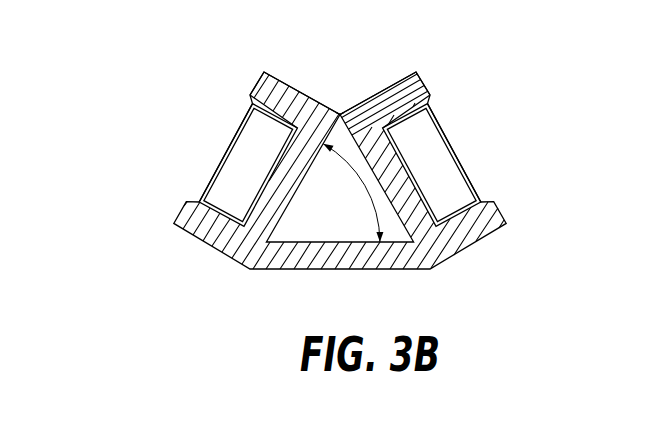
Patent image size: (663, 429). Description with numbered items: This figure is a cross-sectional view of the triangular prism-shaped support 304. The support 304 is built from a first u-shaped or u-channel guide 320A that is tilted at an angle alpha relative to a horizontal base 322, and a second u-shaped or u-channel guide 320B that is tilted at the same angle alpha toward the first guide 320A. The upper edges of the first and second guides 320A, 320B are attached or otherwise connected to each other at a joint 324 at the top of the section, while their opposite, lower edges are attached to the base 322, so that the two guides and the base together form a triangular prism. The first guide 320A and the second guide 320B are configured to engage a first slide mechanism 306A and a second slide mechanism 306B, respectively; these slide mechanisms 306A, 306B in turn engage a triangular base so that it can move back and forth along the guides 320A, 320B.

The triangular prism-shaped support 304 is at (127, 45).
The first u-shaped or u-channel guide 320A is at (261, 71).
The second u-shaped or u-channel guide 320B is at (421, 84).
The horizontal base 322 is at (323, 247).
The joint 324 is at (340, 114).
The first slide mechanism 306A is at (255, 157).
The second slide mechanism 306B is at (446, 181).